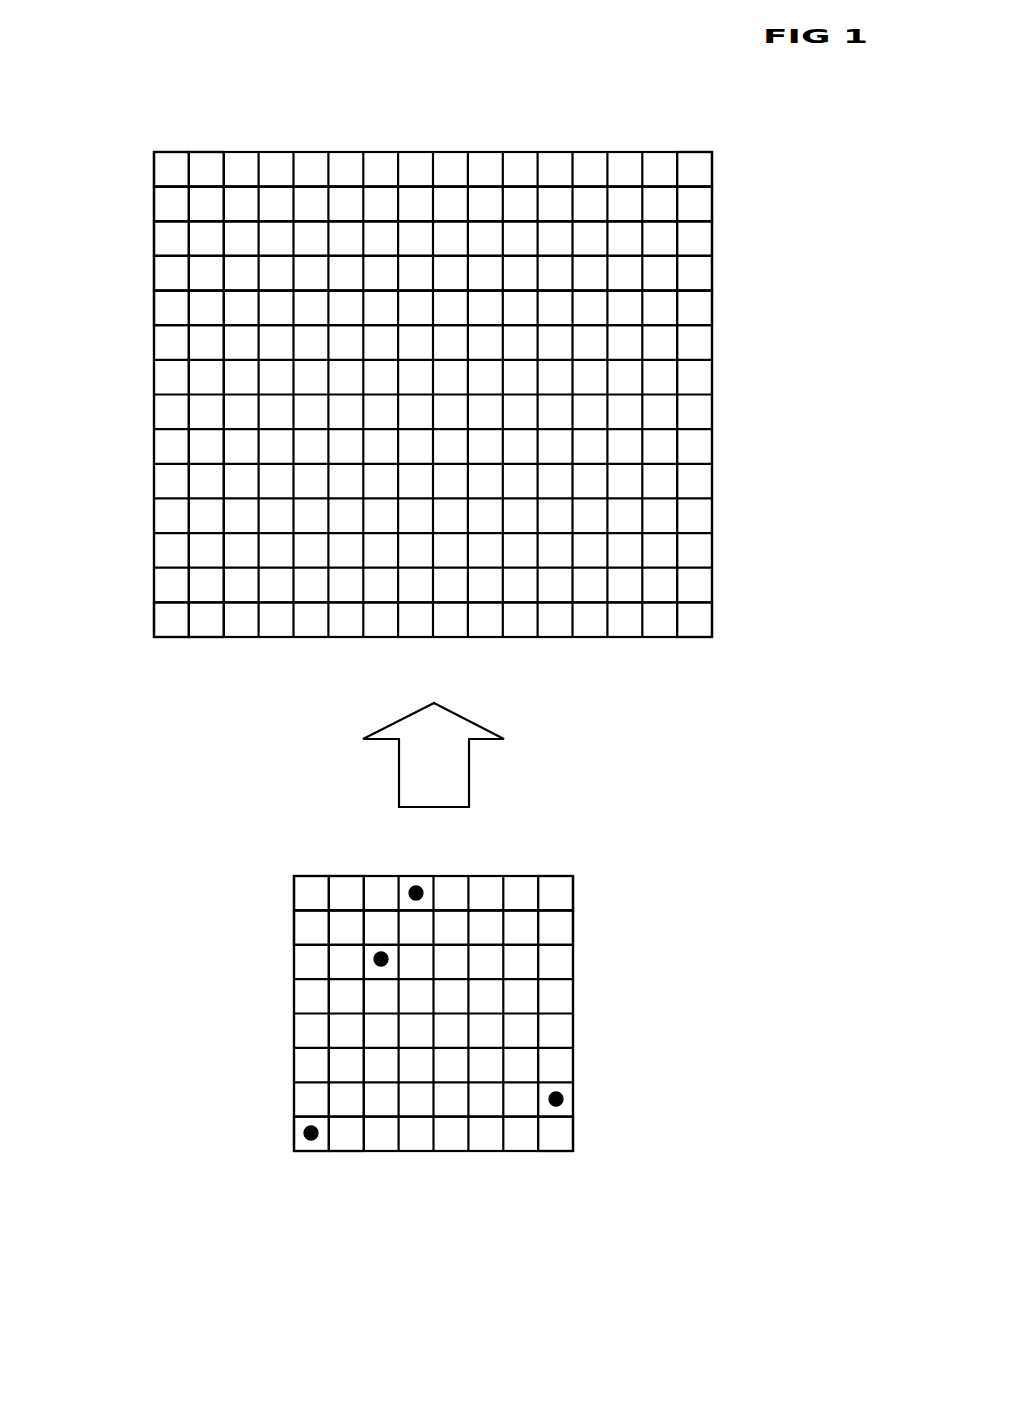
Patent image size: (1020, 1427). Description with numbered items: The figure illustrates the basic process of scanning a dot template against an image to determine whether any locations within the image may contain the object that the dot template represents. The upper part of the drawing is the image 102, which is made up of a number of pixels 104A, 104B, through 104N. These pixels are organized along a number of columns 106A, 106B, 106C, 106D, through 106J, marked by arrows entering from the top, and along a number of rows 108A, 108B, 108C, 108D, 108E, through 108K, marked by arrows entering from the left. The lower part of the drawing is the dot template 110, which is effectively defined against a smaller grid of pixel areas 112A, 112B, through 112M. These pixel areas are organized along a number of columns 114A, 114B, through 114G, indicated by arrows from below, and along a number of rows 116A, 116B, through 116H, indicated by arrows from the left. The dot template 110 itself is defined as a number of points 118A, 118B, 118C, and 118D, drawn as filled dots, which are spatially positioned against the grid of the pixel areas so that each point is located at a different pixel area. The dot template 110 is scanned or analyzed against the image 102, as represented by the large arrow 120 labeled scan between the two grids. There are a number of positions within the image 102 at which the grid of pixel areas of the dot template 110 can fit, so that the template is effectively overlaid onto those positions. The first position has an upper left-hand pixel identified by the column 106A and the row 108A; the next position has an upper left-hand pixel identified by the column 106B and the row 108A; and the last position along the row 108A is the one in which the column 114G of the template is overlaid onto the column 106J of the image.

The image 102 is at (713, 392).
The pixel 104A is at (163, 172).
The pixel 104B is at (197, 176).
The pixel 104N is at (696, 624).
The column 106A is at (172, 144).
The column 106B is at (206, 144).
The column 106C is at (242, 144).
The column 106D is at (276, 144).
The column 106J is at (695, 144).
The row 108A is at (147, 170).
The row 108B is at (147, 204).
The row 108C is at (147, 239).
The row 108D is at (147, 273).
The row 108E is at (147, 308).
The row 108K is at (147, 618).
The dot template 110 is at (573, 1030).
The pixel area 112A is at (312, 888).
The pixel area 112B is at (347, 893).
The pixel area 112M is at (565, 1138).
The column 114A is at (312, 1160).
The column 114B is at (346, 1160).
The column 114G is at (556, 1160).
The row 116A is at (287, 893).
The row 116B is at (287, 928).
The row 116H is at (286, 1133).
The point 118A is at (452, 849).
The point 118B is at (378, 960).
The point 118C is at (562, 1098).
The point 118D is at (303, 1132).
The arrow 120 is at (527, 684).